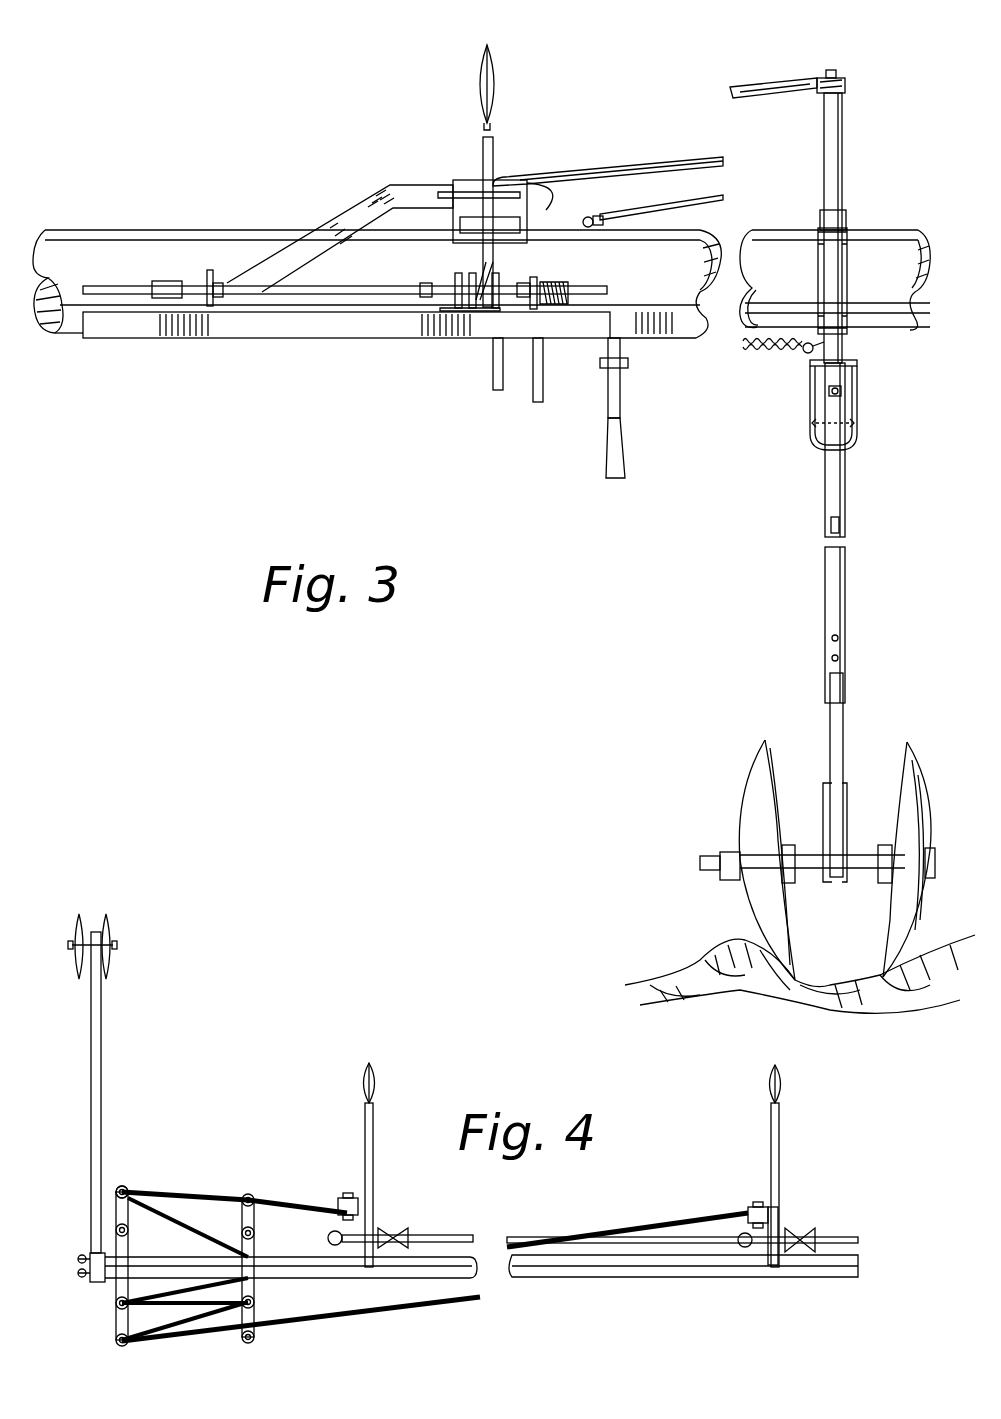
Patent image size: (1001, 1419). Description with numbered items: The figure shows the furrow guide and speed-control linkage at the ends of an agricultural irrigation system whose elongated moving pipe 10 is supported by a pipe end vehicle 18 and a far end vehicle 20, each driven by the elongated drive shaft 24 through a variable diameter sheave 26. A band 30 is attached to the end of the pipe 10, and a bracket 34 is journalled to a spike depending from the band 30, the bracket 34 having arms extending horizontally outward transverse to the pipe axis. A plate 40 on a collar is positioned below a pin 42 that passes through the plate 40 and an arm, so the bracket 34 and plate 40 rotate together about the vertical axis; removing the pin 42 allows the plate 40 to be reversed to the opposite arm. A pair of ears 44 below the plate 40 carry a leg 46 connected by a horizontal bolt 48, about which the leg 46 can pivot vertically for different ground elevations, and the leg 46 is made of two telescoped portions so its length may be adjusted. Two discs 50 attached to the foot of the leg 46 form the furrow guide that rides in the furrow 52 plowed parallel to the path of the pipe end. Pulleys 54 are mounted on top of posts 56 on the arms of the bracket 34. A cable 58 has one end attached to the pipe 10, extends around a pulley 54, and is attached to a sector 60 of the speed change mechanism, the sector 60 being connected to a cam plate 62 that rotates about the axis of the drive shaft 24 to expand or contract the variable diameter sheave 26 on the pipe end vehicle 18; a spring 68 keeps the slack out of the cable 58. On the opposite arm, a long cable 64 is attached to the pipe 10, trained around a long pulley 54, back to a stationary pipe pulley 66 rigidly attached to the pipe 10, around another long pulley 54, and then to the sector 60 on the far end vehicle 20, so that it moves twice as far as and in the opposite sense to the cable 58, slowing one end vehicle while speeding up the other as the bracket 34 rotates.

In FIG. 3, the moving pipe 10 is at (656, 288).
In FIG. 4, the moving pipe 10 is at (352, 1282).
In FIG. 3, the pipe end vehicle 18 is at (541, 145).
In FIG. 4, the pipe end vehicle 18 is at (380, 1156).
In FIG. 4, the far end vehicle 20 is at (762, 1168).
In FIG. 3, the drive shaft 24 is at (390, 282).
In FIG. 4, the drive shaft 24 is at (431, 1236).
In FIG. 3, the variable diameter sheave 26 is at (545, 278).
In FIG. 4, the variable diameter sheave 26 is at (386, 1228).
In FIG. 3, the band 30 is at (848, 226).
In FIG. 4, the band 30 is at (96, 1284).
In FIG. 3, the bracket 34 is at (816, 214).
In FIG. 4, the bracket 34 is at (133, 1250).
In FIG. 3, the plate 40 is at (858, 362).
In FIG. 3, the pin 42 is at (828, 380).
In FIG. 3, the ears 44 is at (858, 418).
In FIG. 3, the leg 46 is at (845, 506).
In FIG. 4, the leg 46 is at (104, 1048).
In FIG. 3, the horizontal bolt 48 is at (808, 432).
In FIG. 3, the discs 50 is at (746, 795).
In FIG. 4, the discs 50 is at (115, 932).
In FIG. 3, the furrow 52 is at (828, 968).
In FIG. 3, the pulley 54 is at (845, 76).
In FIG. 4, the pulley 54 is at (126, 1186).
In FIG. 3, the post 56 is at (843, 128).
In FIG. 3, the cable 58 is at (674, 170).
In FIG. 4, the cable 58 is at (190, 1190).
In FIG. 3, the sector 60 is at (492, 380).
In FIG. 4, the sector 60 is at (358, 1228).
In FIG. 3, the cam plate 62 is at (482, 274).
In FIG. 4, the long cable 64 is at (406, 1316).
In FIG. 4, the pipe pulley 66 is at (256, 1302).
In FIG. 3, the spring 68 is at (772, 352).